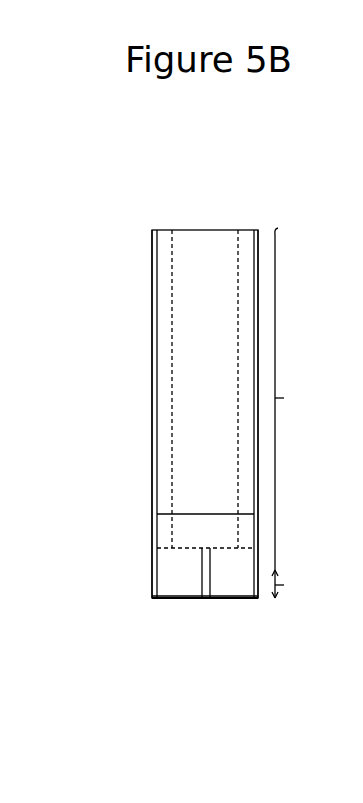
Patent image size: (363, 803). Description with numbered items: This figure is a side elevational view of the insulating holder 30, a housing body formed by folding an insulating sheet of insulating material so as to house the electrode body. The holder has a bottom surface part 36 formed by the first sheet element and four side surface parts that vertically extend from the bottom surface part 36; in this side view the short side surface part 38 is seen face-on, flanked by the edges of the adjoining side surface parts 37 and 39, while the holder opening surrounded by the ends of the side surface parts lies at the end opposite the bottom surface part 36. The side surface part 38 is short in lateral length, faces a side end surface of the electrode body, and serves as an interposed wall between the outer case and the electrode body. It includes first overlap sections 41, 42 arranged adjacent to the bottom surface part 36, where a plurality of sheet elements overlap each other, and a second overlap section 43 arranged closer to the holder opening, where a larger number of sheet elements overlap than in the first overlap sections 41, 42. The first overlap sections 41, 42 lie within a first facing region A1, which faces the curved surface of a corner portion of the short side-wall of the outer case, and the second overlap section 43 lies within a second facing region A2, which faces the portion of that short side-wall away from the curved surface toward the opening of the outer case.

The insulating holder 30 is at (238, 213).
The bottom surface part 36 is at (175, 598).
The side surface part 37 is at (151, 400).
The side surface part 38 is at (210, 343).
The side surface part 39 is at (258, 457).
The first overlap section 41 is at (185, 565).
The first overlap section 42 is at (230, 580).
The second overlap section 43 is at (198, 527).
The first facing region A1 is at (293, 586).
The second facing region A2 is at (294, 402).